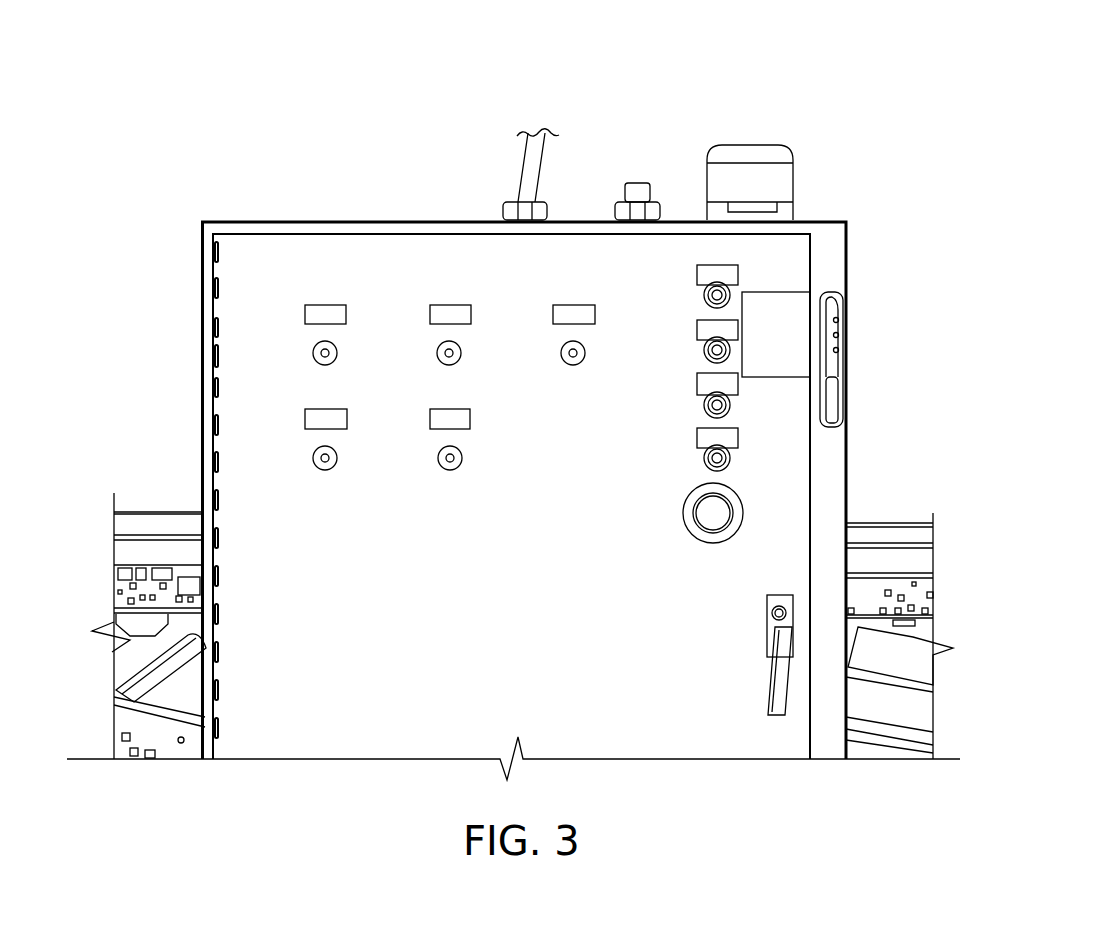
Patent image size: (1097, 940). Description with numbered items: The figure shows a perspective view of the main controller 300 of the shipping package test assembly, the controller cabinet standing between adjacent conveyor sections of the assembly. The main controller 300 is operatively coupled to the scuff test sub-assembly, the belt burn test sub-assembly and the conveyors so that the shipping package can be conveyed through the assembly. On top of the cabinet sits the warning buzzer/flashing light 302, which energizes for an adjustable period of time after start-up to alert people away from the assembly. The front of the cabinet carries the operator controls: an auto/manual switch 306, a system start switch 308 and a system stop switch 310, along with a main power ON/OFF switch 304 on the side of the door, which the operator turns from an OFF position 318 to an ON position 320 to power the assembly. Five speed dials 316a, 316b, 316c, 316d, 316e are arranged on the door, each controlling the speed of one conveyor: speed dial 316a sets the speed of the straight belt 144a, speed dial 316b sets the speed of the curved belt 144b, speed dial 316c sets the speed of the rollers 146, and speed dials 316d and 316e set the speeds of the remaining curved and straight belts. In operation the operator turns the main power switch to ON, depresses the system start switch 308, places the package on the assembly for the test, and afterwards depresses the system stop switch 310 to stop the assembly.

The main controller 300 is at (842, 53).
The warning buzzer/flashing light 302 is at (796, 185).
The main power ON/OFF switch 304 is at (849, 331).
The auto/manual switch 306 is at (730, 295).
The system start switch 308 is at (730, 351).
The system stop switch 310 is at (730, 459).
The speed dial 316a is at (313, 353).
The speed dial 316b is at (438, 352).
The speed dial 316c is at (572, 341).
The speed dial 316d is at (313, 458).
The speed dial 316e is at (450, 470).
The OFF position 318 is at (840, 302).
The ON position 320 is at (838, 406).
The rollers 146 is at (128, 556).
The straight belt 144a is at (190, 692).
The curved belt 144b is at (128, 657).